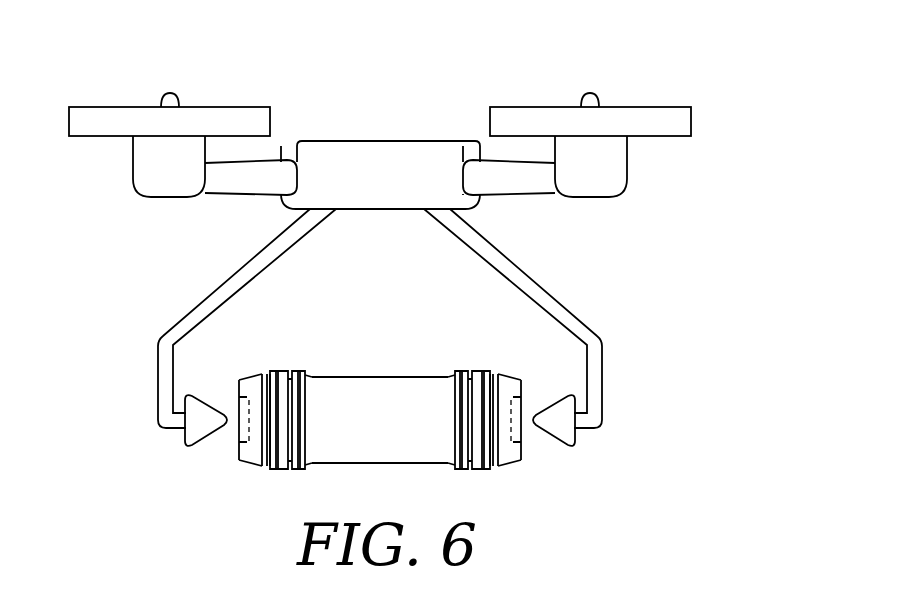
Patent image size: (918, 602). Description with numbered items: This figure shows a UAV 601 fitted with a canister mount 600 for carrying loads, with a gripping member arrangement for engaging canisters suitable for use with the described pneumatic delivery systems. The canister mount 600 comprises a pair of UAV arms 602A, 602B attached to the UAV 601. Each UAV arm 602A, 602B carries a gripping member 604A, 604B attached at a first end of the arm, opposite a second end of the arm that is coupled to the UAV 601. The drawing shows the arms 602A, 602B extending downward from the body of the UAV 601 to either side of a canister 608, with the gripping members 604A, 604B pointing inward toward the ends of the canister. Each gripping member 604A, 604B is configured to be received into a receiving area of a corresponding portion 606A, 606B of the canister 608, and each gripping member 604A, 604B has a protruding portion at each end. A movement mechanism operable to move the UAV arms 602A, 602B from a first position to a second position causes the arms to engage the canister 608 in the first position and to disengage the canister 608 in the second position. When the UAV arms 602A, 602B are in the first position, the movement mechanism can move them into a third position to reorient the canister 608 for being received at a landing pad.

The canister mount 600 is at (98, 326).
The UAV 601 is at (708, 54).
The UAV arm 602A is at (520, 270).
The UAV arm 602B is at (240, 272).
The gripping member 604A is at (570, 450).
The gripping member 604B is at (190, 450).
The portion of canister 606A is at (527, 438).
The portion of canister 606B is at (235, 437).
The canister 608 is at (380, 442).